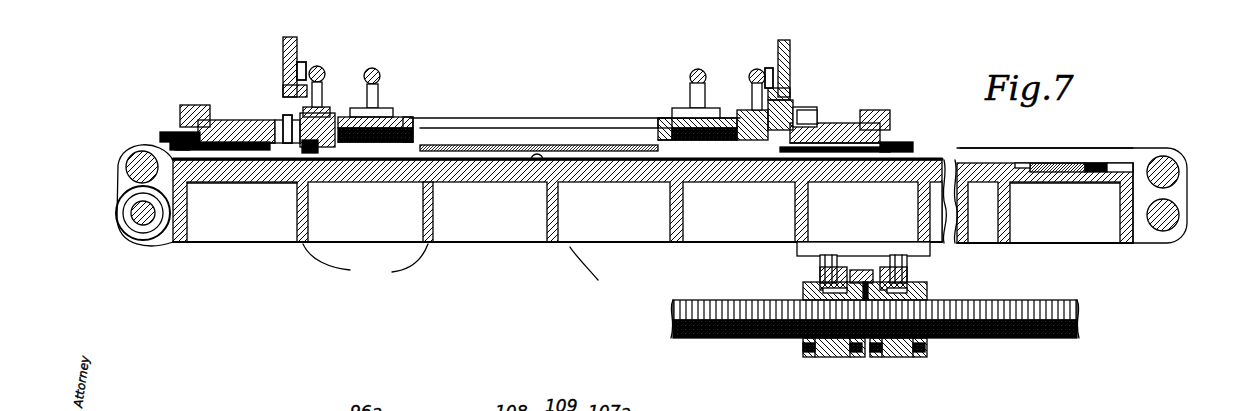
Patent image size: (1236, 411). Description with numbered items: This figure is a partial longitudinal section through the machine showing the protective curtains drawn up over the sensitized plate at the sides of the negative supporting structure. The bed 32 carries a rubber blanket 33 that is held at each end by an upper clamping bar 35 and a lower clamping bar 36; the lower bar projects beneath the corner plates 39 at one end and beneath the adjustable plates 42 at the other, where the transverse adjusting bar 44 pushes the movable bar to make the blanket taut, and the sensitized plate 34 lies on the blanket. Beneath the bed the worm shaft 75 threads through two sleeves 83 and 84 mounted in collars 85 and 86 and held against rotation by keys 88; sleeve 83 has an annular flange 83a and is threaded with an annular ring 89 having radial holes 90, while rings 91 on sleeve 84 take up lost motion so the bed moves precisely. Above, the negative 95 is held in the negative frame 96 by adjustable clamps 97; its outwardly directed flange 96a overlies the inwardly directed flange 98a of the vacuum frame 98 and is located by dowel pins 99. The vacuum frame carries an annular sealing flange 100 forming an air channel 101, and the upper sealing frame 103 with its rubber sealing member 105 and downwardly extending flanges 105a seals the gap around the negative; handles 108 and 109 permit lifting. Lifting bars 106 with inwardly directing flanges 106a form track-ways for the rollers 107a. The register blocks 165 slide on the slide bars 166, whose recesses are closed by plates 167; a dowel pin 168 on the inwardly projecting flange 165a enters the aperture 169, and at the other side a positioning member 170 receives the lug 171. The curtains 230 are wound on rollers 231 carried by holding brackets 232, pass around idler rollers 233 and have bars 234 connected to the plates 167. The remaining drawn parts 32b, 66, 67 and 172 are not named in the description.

The bed 32 is at (615, 184).
The recess 32b is at (466, 271).
The rubber blanket 33 is at (479, 243).
The sensitized plate 34 is at (533, 184).
The upper clamping bar 35 is at (230, 185).
The lower clamping bar 36 is at (656, 207).
The plates 39 is at (242, 196).
The plates 42 is at (1120, 167).
The transverse adjusting bar 44 is at (1053, 165).
The bracket 66 is at (820, 275).
The post 67 is at (905, 263).
The worm shaft 75 is at (1050, 307).
The sleeve 83 is at (888, 357).
The annular flange 83a is at (927, 358).
The sleeve 84 is at (823, 358).
The collar 85 is at (908, 357).
The collar 86 is at (833, 358).
The keys 88 is at (910, 273).
The annular ring 89 is at (873, 357).
The radial holes 90 is at (808, 357).
The rings 91 is at (807, 352).
The negative 95 is at (502, 140).
The negative frame 96 is at (378, 143).
The outwardly directed flange 96a is at (376, 133).
The adjustable clamps 97 is at (393, 143).
The vacuum frame 98 is at (327, 108).
The inwardly directed flange 98a is at (350, 143).
The dowel pins 99 is at (370, 118).
The annular sealing flange 100 is at (270, 143).
The annular air channel 101 is at (300, 213).
The upper sealing frame 103 is at (390, 118).
The rubber sealing member 105 is at (413, 132).
The downwardly extending flanges 105a is at (420, 138).
The lifting bars 106 is at (285, 52).
The inwardly directing flanges 106a is at (305, 92).
The rollers 107a is at (303, 62).
The handles 108 is at (376, 70).
The handles 109 is at (320, 68).
The register blocks 165 is at (197, 128).
The inwardly projecting flange 165a is at (270, 143).
The slide bars 166 is at (233, 124).
The plates 167 is at (163, 136).
The dowel pin 168 is at (290, 115).
The aperture 169 is at (283, 118).
The positioning member 170 is at (820, 103).
The lug 171 is at (795, 107).
The lug 172 is at (187, 106).
The curtains 230 is at (175, 150).
The rollers 231 is at (118, 223).
The holding brackets 232 is at (118, 187).
The idler rollers 233 is at (128, 160).
The bars 234 is at (163, 133).